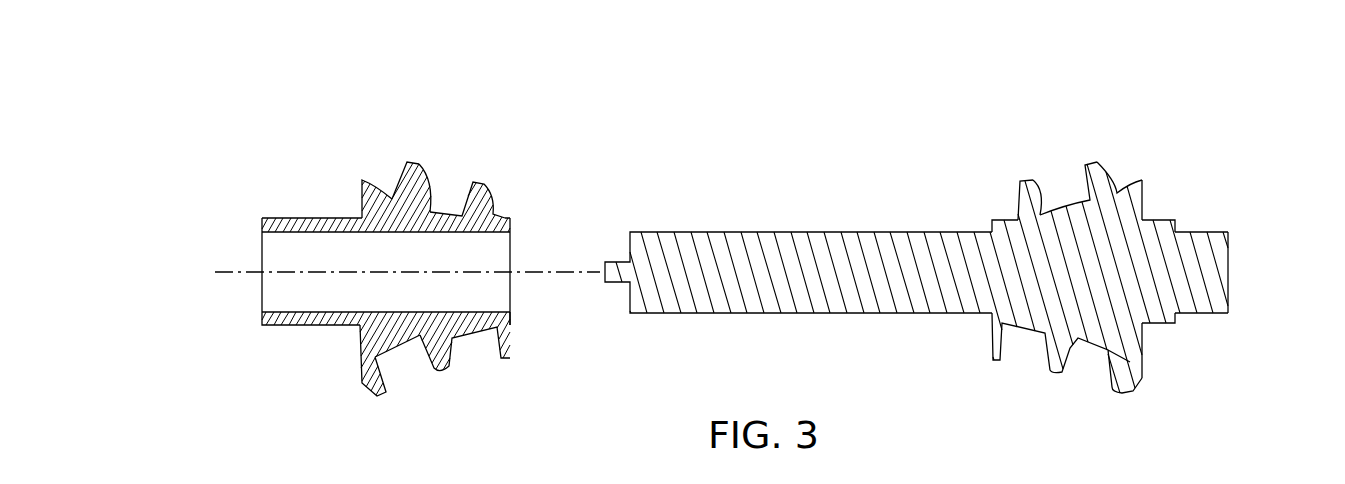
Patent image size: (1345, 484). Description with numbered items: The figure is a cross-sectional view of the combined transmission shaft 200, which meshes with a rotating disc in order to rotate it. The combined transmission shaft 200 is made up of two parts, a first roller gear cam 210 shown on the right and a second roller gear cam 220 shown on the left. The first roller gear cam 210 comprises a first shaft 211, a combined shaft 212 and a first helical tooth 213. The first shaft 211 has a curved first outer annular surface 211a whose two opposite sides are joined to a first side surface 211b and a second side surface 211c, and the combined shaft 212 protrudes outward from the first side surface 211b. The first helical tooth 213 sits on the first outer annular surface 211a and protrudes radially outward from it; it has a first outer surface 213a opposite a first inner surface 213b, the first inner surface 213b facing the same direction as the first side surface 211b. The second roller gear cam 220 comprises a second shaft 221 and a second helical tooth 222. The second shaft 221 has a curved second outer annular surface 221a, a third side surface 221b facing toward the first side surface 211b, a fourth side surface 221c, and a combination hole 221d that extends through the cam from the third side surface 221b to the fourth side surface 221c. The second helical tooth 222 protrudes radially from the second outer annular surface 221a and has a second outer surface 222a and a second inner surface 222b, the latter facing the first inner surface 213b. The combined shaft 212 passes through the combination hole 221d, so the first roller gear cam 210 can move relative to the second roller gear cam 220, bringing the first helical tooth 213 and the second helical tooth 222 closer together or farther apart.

The combined transmission shaft 200 is at (723, 146).
The first roller gear cam 210 is at (1215, 192).
The first shaft 211 is at (1115, 282).
The first outer annular surface 211a is at (1127, 183).
The first side surface 211b is at (989, 224).
The second side surface 211c is at (1233, 255).
The combined shaft 212 is at (908, 284).
The first helical tooth 213 is at (1123, 392).
The first outer surface 213a is at (1040, 191).
The first inner surface 213b is at (1014, 199).
The second roller gear cam 220 is at (286, 182).
The second shaft 221 is at (312, 326).
The second outer annular surface 221a is at (401, 354).
The third side surface 221b is at (513, 223).
The fourth side surface 221c is at (259, 224).
The combination hole 221d is at (288, 293).
The second helical tooth 222 is at (376, 394).
The second outer surface 222a is at (396, 171).
The second inner surface 222b is at (419, 186).